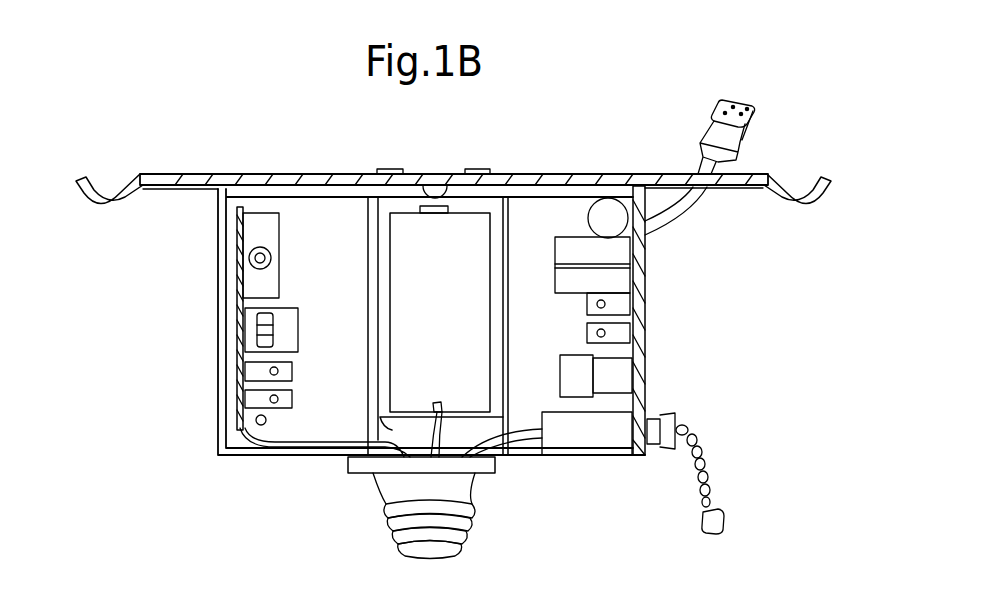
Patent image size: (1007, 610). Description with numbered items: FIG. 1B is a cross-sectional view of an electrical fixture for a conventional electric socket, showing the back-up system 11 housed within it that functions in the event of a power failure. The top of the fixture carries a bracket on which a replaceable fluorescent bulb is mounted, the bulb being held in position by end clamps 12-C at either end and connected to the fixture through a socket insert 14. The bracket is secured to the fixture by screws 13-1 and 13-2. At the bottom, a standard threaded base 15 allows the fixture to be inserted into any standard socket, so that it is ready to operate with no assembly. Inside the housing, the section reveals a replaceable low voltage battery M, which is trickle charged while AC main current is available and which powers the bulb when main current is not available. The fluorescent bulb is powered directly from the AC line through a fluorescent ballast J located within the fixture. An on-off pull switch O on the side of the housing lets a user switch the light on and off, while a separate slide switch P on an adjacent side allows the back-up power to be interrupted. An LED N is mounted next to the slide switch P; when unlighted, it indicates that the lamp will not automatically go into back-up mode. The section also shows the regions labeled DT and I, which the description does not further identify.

The back-up system 11 is at (328, 407).
The end clamps 12-C is at (122, 188).
The screw 13-1 is at (400, 210).
The screw 13-2 is at (492, 207).
The socket insert 14 is at (718, 114).
The threaded base 15 is at (385, 532).
The LED N is at (248, 262).
The slide switch P is at (250, 334).
The insulated terminal connector I is at (248, 373).
The detector/timer compartment DT is at (338, 294).
The battery M is at (439, 309).
The fluorescent ballast J is at (543, 337).
The on-off pull switch O is at (706, 466).